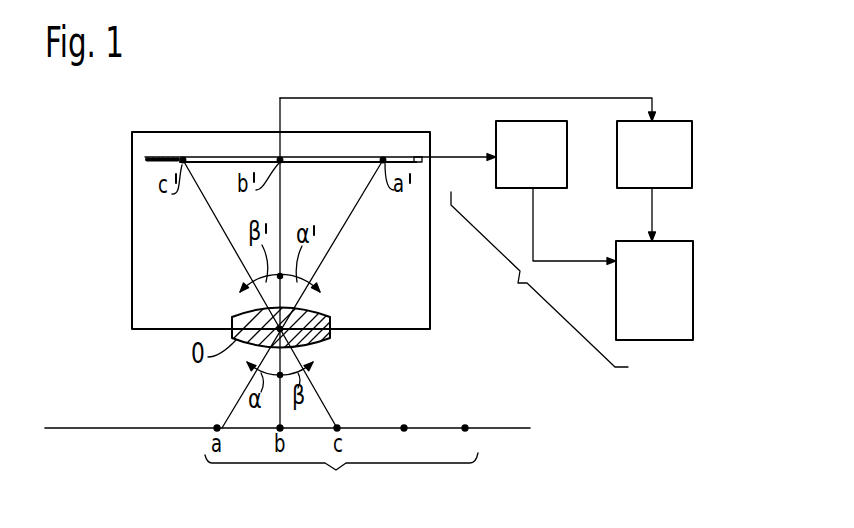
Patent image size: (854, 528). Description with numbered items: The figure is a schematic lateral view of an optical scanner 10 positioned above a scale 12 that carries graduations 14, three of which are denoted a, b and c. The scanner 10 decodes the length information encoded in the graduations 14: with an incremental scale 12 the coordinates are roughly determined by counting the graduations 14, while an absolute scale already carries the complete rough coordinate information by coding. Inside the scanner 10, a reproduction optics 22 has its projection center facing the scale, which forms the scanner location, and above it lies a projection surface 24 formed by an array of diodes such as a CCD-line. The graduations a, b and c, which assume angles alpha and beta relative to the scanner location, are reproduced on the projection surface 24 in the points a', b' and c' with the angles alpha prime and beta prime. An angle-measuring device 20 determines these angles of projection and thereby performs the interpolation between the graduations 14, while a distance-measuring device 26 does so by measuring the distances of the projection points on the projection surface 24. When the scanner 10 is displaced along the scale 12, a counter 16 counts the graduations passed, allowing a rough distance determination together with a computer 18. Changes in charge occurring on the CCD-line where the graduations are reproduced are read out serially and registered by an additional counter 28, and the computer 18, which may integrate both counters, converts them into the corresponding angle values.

The scanner 10 is at (430, 297).
The scale 12 is at (146, 429).
The graduations 14 is at (341, 479).
The counter 16 is at (682, 142).
The computer 18 is at (680, 292).
The angle-measuring device 20 is at (350, 275).
The reproduction optics 22 is at (324, 343).
The projection surface 24 is at (217, 156).
The distance-measuring device 26 is at (539, 279).
The additional counter 28 is at (556, 146).